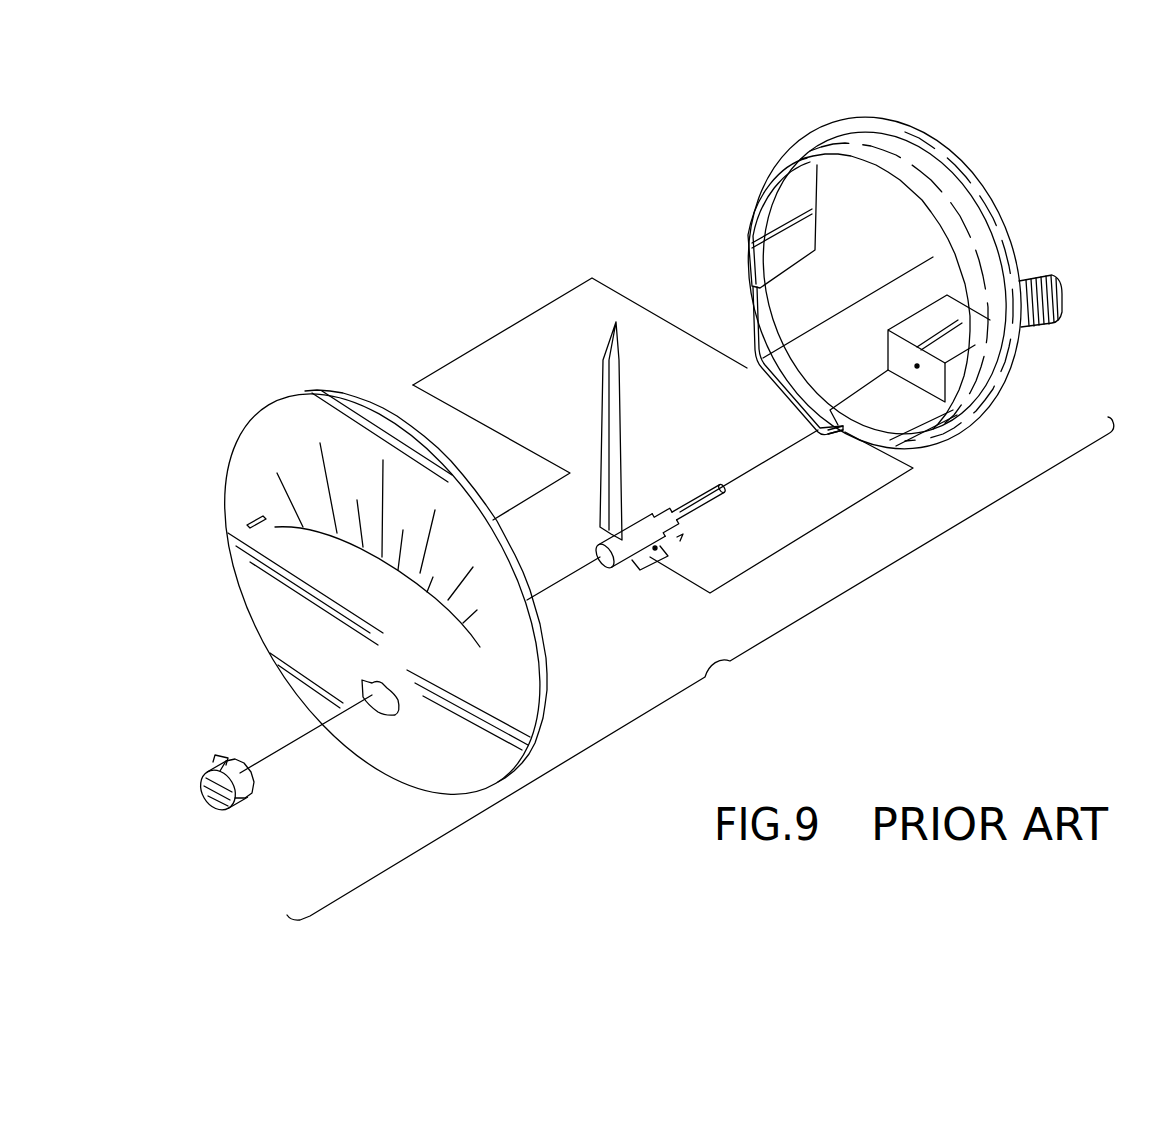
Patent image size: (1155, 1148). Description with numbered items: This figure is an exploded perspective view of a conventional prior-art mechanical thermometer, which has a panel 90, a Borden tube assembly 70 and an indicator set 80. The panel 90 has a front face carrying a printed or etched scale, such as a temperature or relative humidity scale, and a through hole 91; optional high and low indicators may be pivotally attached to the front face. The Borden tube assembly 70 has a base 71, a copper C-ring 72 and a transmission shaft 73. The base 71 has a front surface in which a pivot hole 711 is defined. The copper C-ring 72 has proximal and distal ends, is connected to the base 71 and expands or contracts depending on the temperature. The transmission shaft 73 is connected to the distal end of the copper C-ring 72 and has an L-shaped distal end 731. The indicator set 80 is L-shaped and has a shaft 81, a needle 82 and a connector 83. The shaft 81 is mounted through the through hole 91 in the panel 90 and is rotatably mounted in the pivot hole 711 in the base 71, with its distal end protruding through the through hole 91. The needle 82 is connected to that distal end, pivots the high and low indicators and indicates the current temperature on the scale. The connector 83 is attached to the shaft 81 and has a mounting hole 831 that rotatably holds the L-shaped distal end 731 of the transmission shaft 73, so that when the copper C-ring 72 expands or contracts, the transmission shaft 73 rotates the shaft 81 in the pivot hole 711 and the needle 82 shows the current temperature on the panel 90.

The Borden tube assembly 70 is at (780, 132).
The base 71 is at (907, 310).
The pivot hole 711 is at (918, 370).
The copper C-ring 72 is at (748, 232).
The transmission shaft 73 is at (757, 330).
The L-shaped distal end 731 is at (833, 437).
The indicator set 80 is at (592, 346).
The shaft 81 is at (724, 484).
The needle 82 is at (613, 457).
The connector 83 is at (683, 536).
The mounting hole 831 is at (655, 548).
The panel 90 is at (261, 380).
The through hole 91 is at (377, 718).